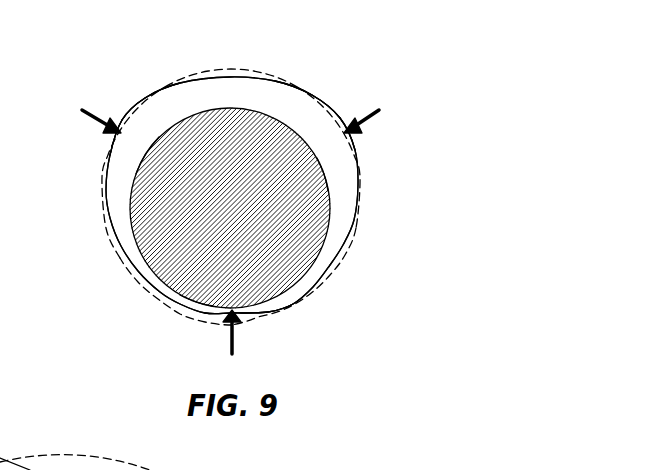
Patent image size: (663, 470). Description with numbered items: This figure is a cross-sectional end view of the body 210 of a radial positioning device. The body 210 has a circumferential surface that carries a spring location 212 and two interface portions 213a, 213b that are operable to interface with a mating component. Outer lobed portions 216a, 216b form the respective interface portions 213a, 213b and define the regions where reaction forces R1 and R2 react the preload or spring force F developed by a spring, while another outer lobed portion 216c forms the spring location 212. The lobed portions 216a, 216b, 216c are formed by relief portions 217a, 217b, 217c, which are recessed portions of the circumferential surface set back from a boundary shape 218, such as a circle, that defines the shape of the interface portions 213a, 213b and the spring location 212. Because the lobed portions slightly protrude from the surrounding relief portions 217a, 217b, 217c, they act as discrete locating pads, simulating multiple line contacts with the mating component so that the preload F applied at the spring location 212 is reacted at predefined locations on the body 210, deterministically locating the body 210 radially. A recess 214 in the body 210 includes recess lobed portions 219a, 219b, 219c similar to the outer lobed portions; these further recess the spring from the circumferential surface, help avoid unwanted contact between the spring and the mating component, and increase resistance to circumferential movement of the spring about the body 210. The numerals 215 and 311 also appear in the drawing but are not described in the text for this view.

The body 210 is at (184, 39).
The spring location 212 is at (237, 317).
The interface portion 213a is at (118, 135).
The interface portion 213b is at (348, 137).
The recess 214 is at (218, 318).
The outer surface 215 is at (245, 315).
The outer lobed portion 216a is at (140, 120).
The outer lobed portion 216b is at (318, 117).
The outer lobed portion 216c is at (248, 321).
The relief portion 217a is at (125, 263).
The relief portion 217b is at (243, 73).
The relief portion 217c is at (340, 262).
The boundary shape 218 is at (107, 237).
The recess lobed portion 219a is at (143, 160).
The recess lobed portion 219b is at (318, 163).
The recess lobed portion 219c is at (207, 308).
The gap 311 is at (360, 185).
The reaction force R1 is at (99, 108).
The reaction force R2 is at (364, 109).
The spring force F is at (228, 340).